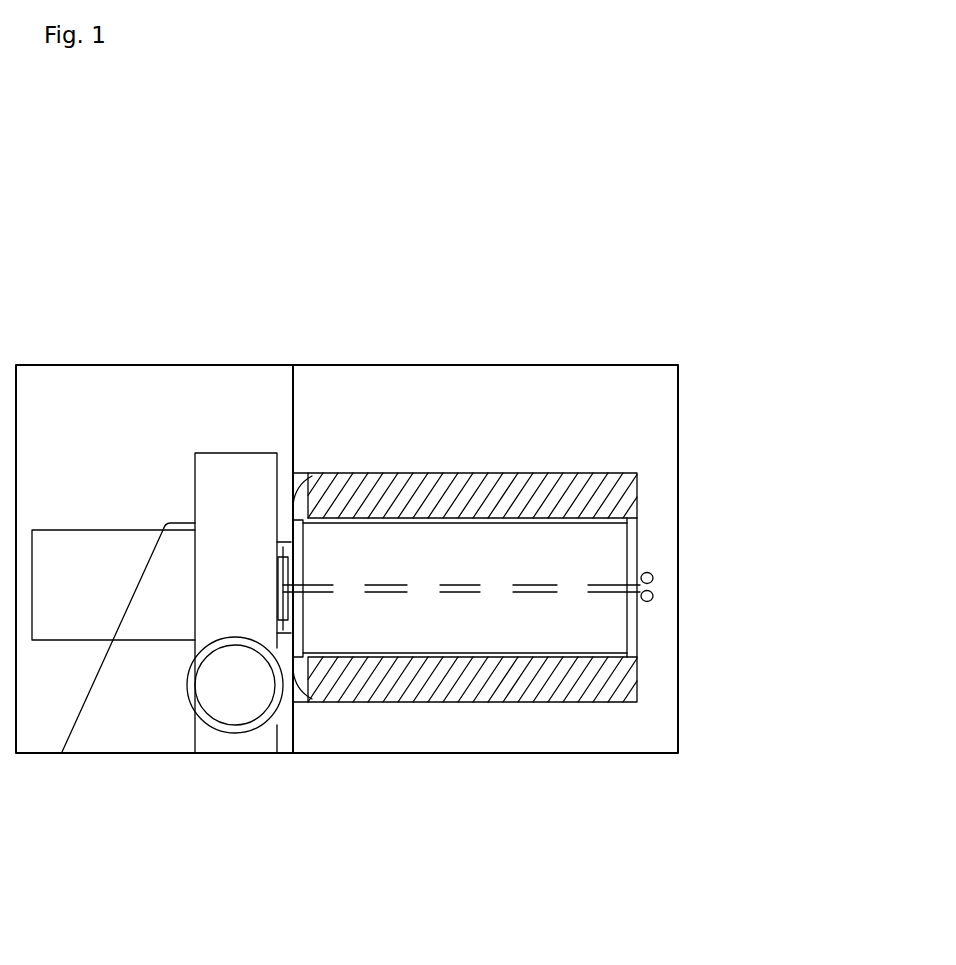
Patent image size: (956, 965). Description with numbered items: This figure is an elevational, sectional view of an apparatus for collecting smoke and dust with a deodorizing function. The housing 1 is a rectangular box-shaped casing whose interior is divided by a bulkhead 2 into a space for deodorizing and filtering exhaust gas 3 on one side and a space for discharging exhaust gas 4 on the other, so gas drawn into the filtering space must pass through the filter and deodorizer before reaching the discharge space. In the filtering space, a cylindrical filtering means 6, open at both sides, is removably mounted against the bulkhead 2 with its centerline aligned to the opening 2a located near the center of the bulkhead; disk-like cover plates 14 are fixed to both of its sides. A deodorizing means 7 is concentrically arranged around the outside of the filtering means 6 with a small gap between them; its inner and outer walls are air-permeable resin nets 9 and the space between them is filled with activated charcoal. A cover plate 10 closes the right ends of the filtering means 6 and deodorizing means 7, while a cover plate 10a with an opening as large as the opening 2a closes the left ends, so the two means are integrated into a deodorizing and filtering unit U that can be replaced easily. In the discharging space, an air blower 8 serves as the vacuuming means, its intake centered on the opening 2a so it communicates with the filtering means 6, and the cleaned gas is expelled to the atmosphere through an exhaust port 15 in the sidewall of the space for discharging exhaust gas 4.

The housing 1 is at (540, 366).
The bulkhead 2 is at (292, 423).
The opening 2a is at (302, 598).
The space for deodorizing and filtering exhaust gas 3 is at (618, 395).
The space for discharging exhaust gas 4 is at (53, 745).
The filtering means 6 is at (440, 523).
The deodorizing means 7 is at (505, 700).
The air blower 8 is at (199, 466).
The net 9 is at (384, 477).
The cover plate 10 is at (638, 540).
The cover plate 10a is at (316, 478).
The cover plate 14 is at (292, 736).
The exhaust port 15 is at (232, 734).
The deodorizing and filtering unit U is at (526, 430).